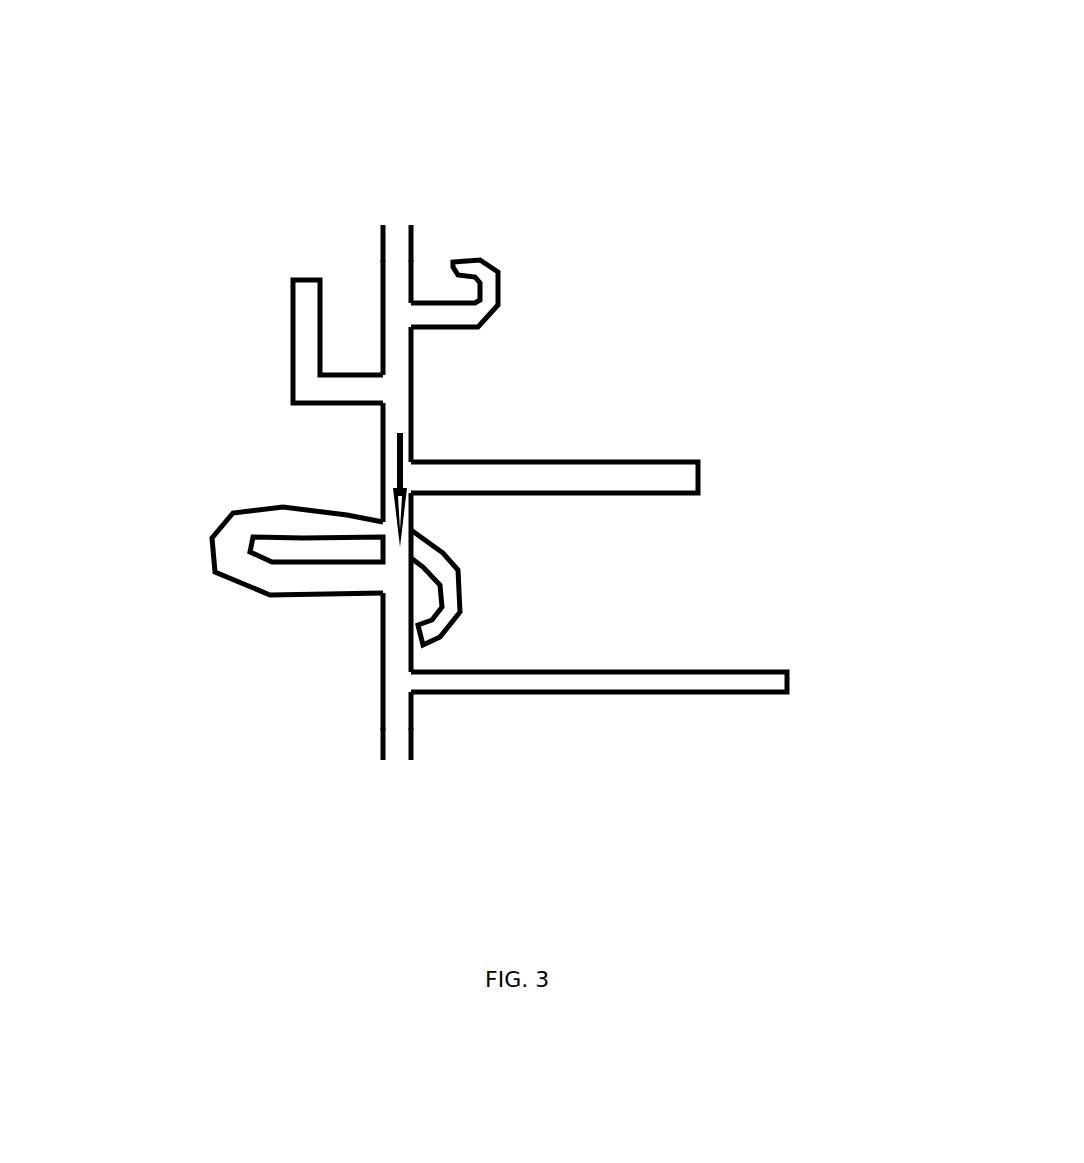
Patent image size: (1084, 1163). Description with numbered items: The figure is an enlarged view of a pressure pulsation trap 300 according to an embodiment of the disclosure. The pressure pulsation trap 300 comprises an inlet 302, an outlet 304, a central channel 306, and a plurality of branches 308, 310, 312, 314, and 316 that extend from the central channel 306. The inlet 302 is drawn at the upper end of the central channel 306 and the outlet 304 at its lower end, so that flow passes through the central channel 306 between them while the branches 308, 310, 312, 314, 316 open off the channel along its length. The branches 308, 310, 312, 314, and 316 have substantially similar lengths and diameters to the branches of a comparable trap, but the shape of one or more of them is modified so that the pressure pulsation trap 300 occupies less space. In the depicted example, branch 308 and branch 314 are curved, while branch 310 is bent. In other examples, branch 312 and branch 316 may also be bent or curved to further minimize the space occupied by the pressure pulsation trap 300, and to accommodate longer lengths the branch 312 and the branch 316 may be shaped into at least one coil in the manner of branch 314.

The pressure pulsation trap 300 is at (502, 413).
The inlet 302 is at (410, 226).
The outlet 304 is at (381, 746).
The central channel 306 is at (413, 415).
The branch 308 is at (499, 289).
The branch 310 is at (292, 372).
The branch 312 is at (699, 462).
The branch 314 is at (235, 580).
The branch 316 is at (648, 668).